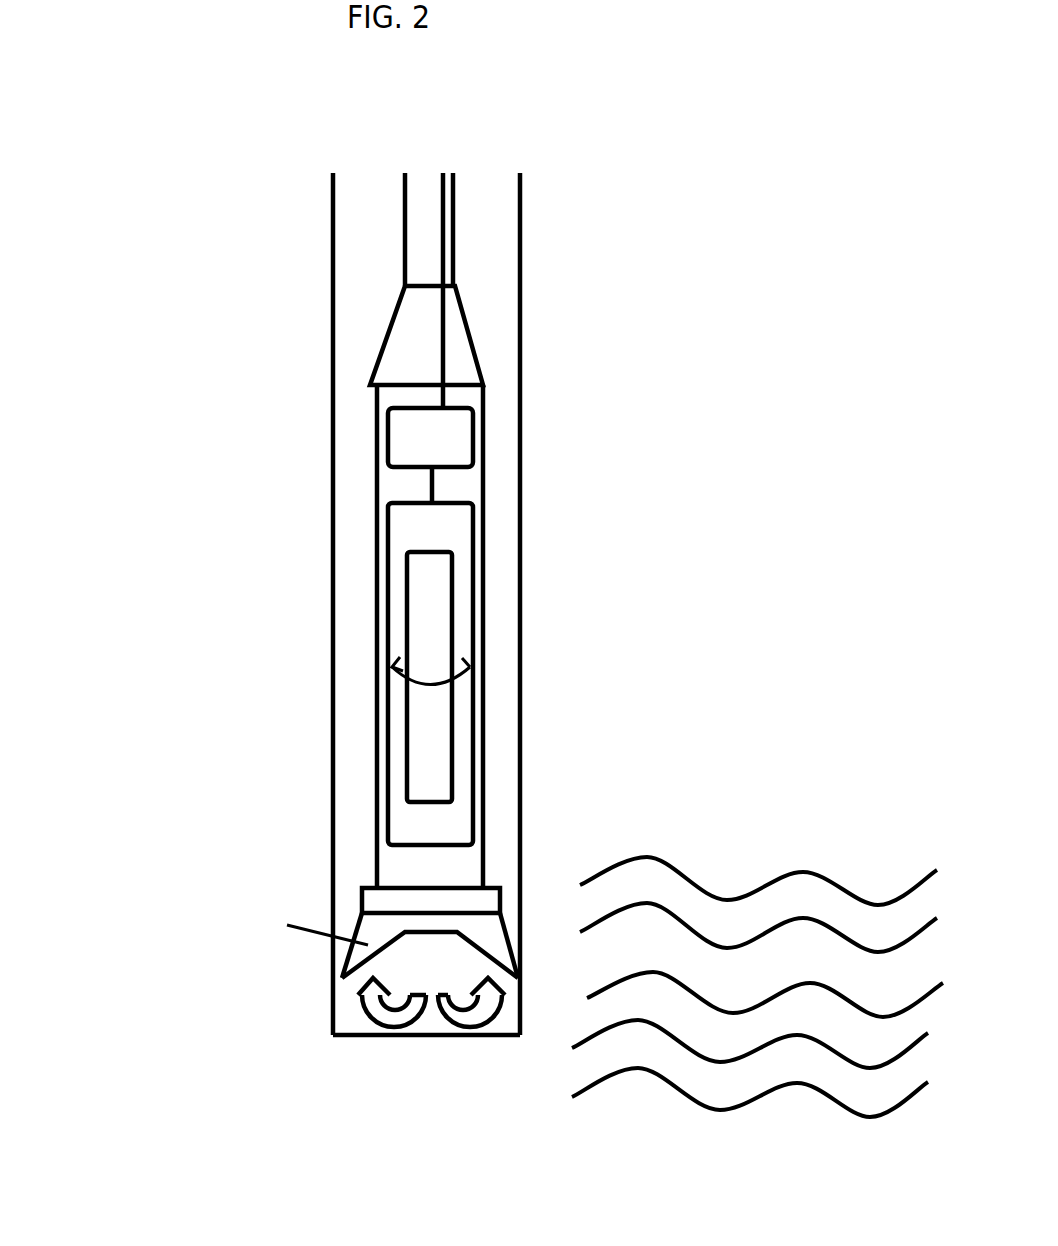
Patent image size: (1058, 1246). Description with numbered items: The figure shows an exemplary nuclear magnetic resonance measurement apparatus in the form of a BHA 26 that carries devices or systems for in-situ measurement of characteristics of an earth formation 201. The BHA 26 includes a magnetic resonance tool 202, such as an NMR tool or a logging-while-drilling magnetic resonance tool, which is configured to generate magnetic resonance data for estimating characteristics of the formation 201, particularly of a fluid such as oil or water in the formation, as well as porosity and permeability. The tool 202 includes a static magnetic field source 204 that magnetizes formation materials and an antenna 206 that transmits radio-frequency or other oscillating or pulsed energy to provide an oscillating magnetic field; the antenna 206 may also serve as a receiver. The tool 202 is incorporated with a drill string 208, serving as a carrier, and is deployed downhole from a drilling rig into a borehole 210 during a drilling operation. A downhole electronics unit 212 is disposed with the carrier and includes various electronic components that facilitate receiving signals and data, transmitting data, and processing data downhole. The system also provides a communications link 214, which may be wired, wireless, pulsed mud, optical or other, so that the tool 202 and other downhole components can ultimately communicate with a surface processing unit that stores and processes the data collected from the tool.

The BHA 26 is at (185, 348).
The earth formation 201 is at (750, 787).
The magnetic resonance tool 202 is at (390, 538).
The static magnetic field source 204 is at (432, 578).
The antenna 206 is at (470, 675).
The drill string 208 is at (405, 235).
The borehole 210 is at (498, 322).
The downhole electronics unit 212 is at (415, 447).
The communications link 214 is at (443, 243).